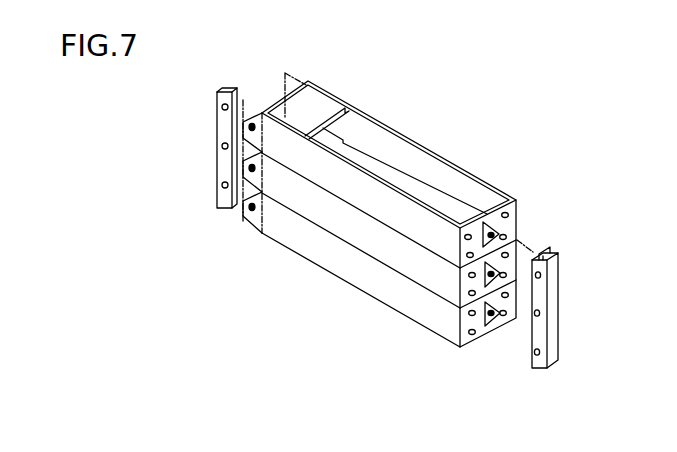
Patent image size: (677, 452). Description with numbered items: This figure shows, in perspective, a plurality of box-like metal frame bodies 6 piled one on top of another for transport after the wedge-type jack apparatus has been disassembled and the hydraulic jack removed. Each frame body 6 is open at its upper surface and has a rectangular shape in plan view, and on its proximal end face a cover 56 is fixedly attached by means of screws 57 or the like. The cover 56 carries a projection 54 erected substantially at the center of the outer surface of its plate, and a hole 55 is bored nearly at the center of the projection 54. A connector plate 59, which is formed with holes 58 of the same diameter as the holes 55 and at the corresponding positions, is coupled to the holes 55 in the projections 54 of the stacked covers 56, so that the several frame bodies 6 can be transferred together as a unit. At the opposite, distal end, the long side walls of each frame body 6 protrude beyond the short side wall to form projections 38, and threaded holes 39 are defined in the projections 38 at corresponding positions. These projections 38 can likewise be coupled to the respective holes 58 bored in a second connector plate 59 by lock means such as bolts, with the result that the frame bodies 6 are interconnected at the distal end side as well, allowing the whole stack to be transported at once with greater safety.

The frame body 6 is at (435, 210).
The projection 38 is at (253, 152).
The threaded hole 39 is at (243, 210).
The projection 54 is at (484, 219).
The hole 55 is at (488, 238).
The cover 56 is at (516, 206).
The screw 57 is at (512, 233).
The hole 58 is at (222, 107).
The connector plate 59 is at (229, 91).